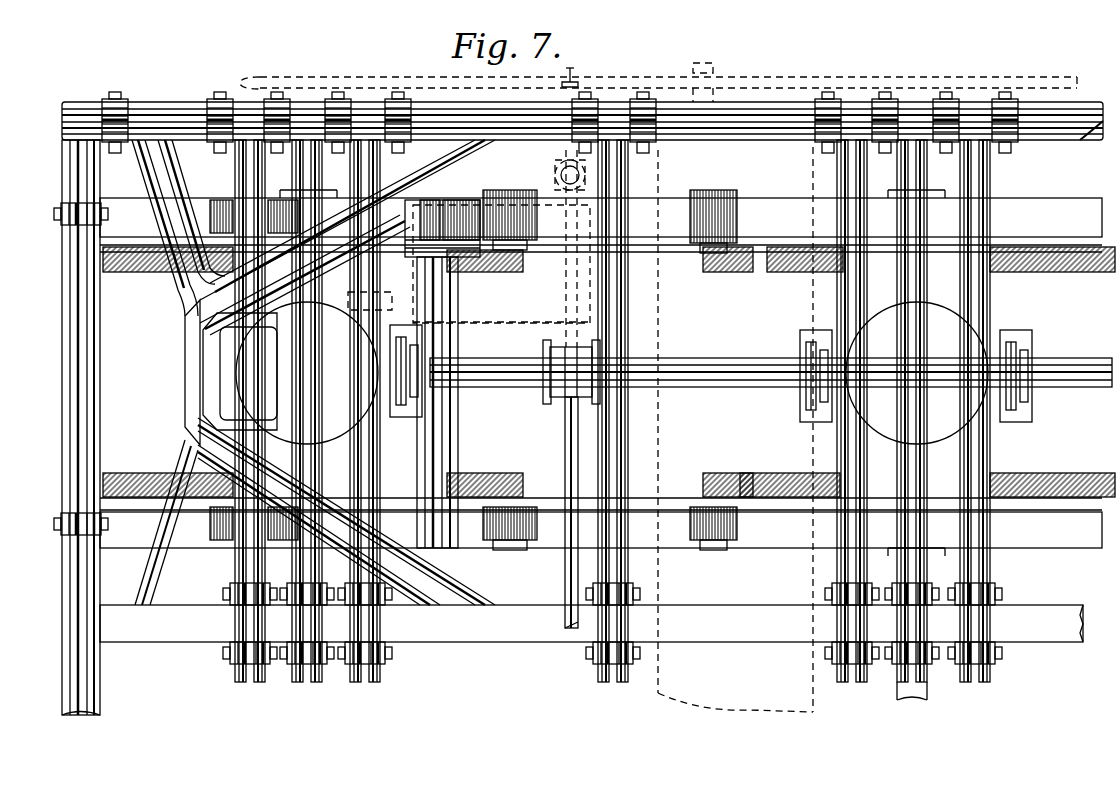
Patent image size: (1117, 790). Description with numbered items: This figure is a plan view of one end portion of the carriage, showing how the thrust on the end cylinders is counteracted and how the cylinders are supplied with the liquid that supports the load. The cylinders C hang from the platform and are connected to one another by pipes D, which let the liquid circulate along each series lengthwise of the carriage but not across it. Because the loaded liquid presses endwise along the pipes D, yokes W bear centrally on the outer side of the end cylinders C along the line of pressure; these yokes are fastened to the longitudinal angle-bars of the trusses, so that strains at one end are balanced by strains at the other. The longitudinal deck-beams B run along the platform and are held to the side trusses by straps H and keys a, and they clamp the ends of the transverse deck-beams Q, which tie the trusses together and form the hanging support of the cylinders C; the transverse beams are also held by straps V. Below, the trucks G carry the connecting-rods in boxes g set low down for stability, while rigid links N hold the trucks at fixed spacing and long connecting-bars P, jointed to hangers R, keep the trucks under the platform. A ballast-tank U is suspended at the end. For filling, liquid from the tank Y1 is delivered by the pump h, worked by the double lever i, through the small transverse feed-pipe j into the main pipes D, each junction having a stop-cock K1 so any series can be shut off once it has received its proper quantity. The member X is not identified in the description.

The deck-beam B is at (1030, 138).
The strap H is at (336, 105).
The key a is at (828, 94).
The double lever i is at (578, 77).
The transverse deck-beam Q is at (62, 358).
The strap V is at (58, 220).
The box g is at (322, 552).
The truck G is at (601, 373).
The rigid link N is at (664, 226).
The connecting-bar P is at (700, 252).
The hanger R is at (445, 205).
The yoke W is at (313, 372).
The cylinder C is at (272, 392).
The pipe D is at (732, 388).
The stop-cock K1 is at (533, 390).
The transverse feed-pipe j is at (562, 300).
The pump h is at (553, 173).
The ballast-tank U is at (501, 335).
The bottom beam X is at (591, 623).
The tank Y1 is at (660, 588).